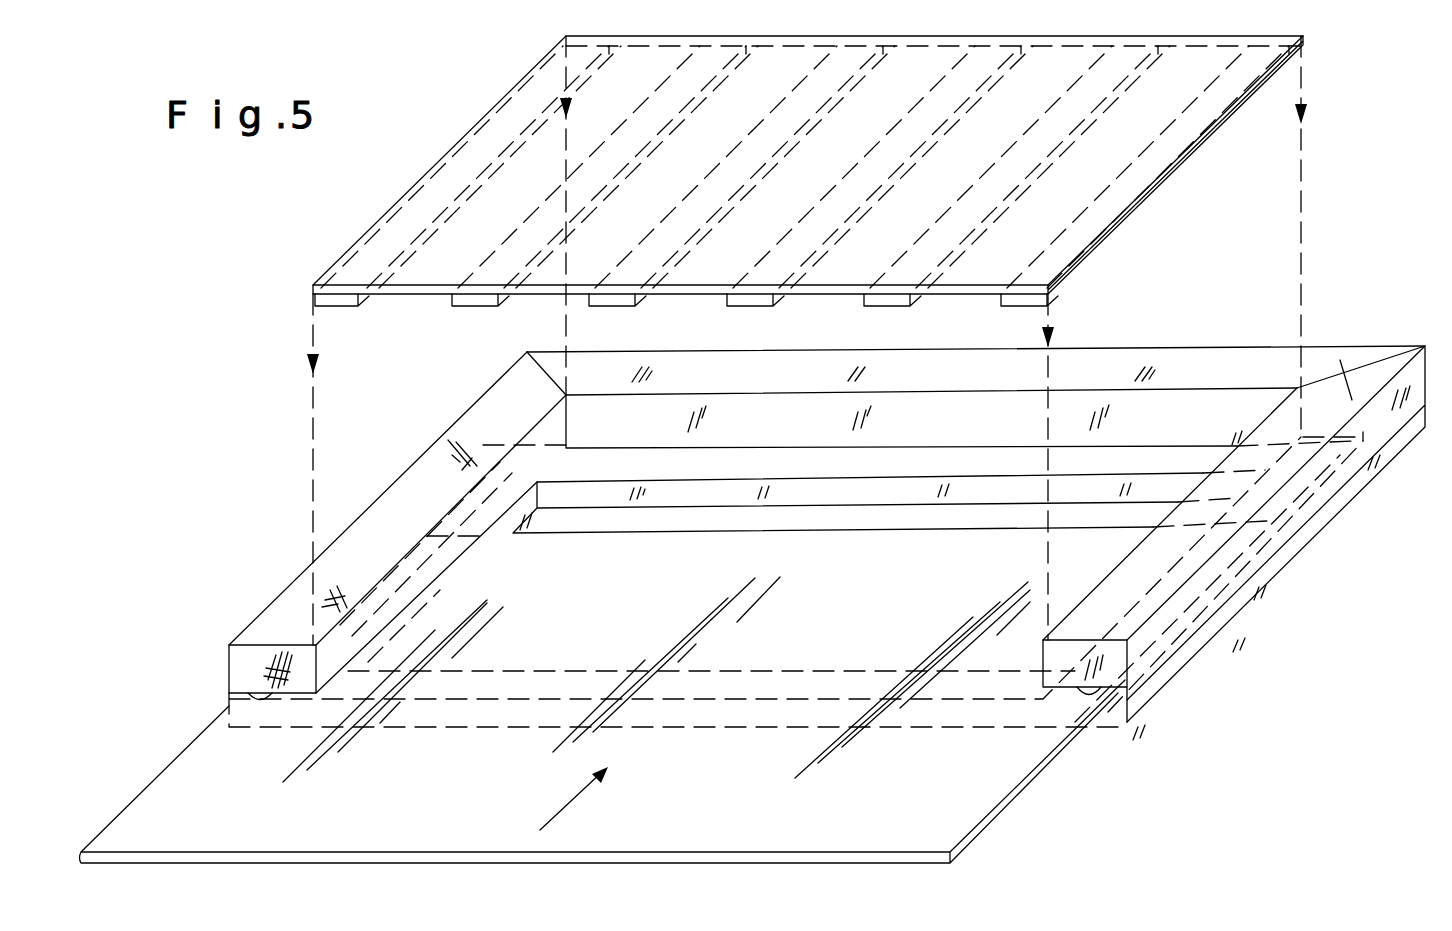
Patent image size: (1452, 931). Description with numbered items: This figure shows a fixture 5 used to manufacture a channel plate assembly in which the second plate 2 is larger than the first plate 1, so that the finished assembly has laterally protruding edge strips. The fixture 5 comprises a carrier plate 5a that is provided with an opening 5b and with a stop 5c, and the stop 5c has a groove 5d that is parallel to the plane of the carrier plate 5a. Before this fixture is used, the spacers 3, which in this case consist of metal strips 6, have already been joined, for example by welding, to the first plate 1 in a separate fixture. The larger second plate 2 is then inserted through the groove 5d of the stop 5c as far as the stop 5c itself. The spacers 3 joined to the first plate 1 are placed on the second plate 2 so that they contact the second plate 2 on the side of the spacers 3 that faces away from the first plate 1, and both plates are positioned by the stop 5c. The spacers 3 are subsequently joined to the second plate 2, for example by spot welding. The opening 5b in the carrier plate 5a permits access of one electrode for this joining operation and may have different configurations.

The first plate 1 is at (808, 175).
The second plate 2 is at (975, 790).
The spacers 3 is at (735, 292).
The metal strips 6 is at (1048, 298).
The fixture 5 is at (791, 533).
The carrier plate 5a is at (593, 462).
The opening 5b is at (569, 528).
The stop 5c is at (353, 603).
The groove 5d is at (262, 694).